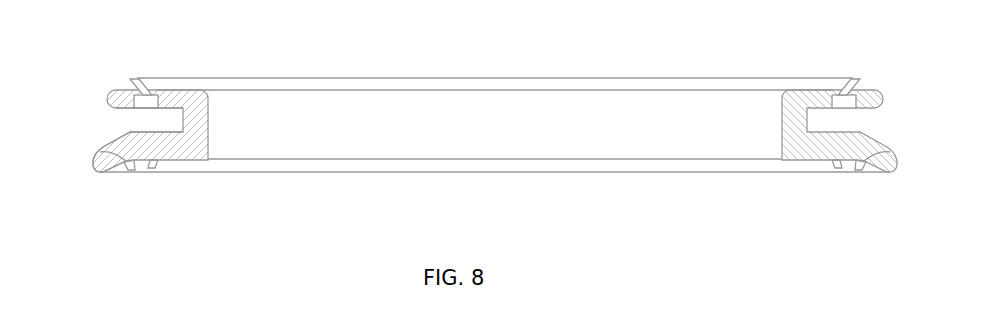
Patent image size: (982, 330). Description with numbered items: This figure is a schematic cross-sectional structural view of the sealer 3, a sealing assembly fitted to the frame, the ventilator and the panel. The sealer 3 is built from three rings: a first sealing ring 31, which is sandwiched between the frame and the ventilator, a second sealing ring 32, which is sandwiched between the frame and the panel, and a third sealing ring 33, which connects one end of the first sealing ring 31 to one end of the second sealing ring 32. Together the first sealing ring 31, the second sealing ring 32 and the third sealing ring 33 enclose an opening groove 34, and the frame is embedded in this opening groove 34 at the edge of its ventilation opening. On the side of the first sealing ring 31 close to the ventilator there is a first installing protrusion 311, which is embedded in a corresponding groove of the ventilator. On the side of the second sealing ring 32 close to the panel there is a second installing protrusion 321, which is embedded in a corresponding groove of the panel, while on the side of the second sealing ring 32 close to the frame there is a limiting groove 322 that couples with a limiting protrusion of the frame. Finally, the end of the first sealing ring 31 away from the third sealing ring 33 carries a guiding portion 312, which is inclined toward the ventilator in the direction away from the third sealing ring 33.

The sealer 3 is at (485, 106).
The first sealing ring 31 is at (163, 147).
The first installing protrusion 311 is at (128, 168).
The guiding portion 312 is at (107, 155).
The second sealing ring 32 is at (125, 101).
The second installing protrusion 321 is at (138, 81).
The limiting groove 322 is at (152, 101).
The third sealing ring 33 is at (195, 130).
The opening groove 34 is at (135, 124).